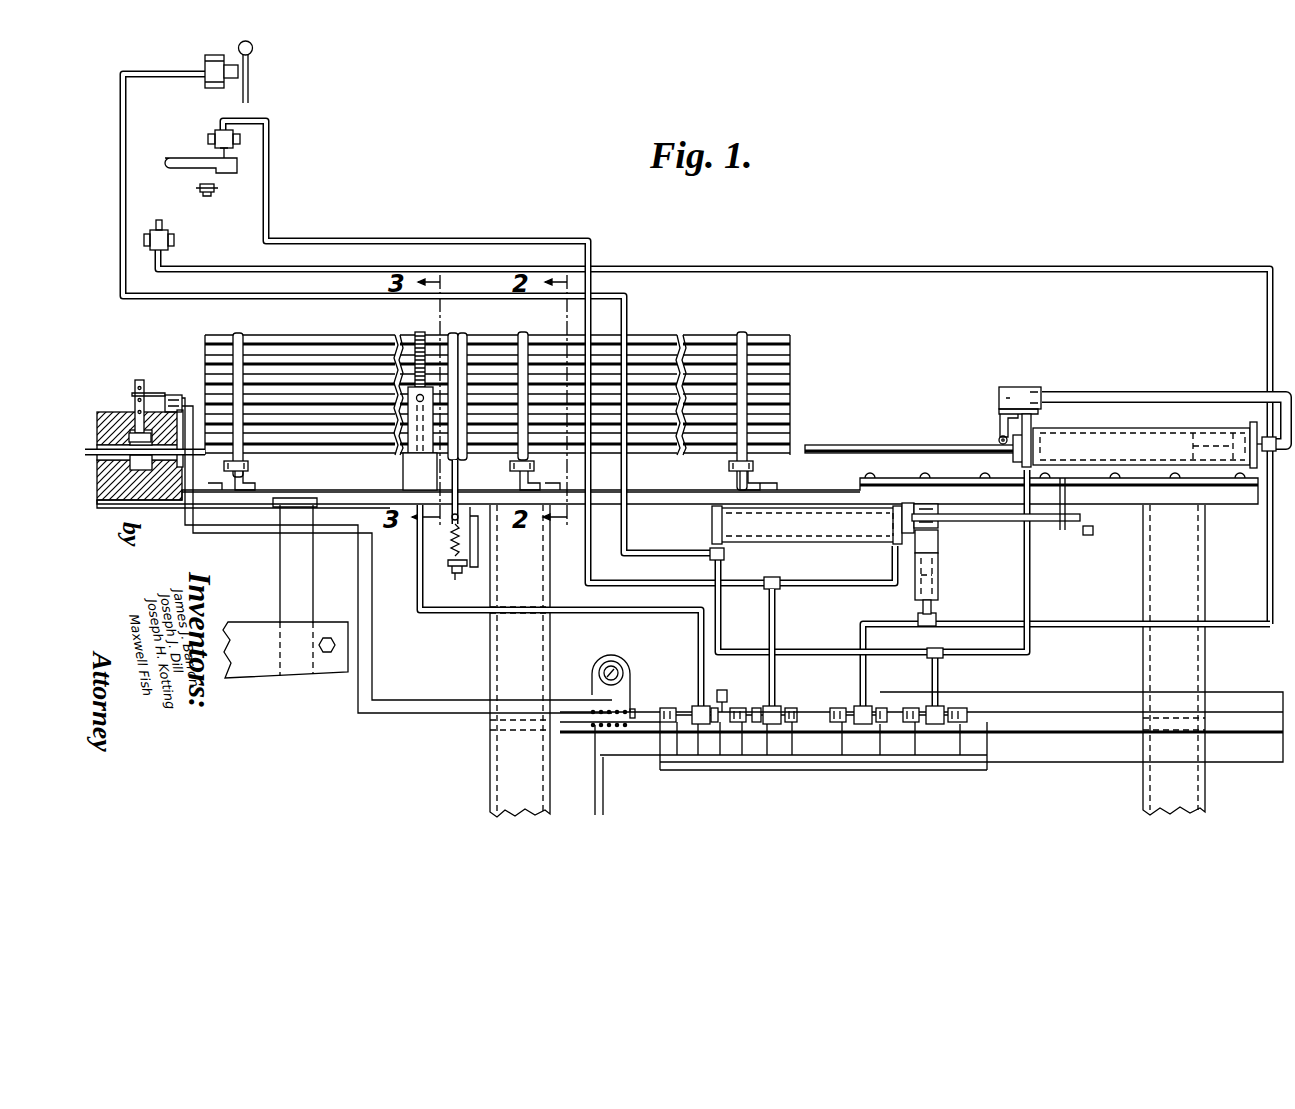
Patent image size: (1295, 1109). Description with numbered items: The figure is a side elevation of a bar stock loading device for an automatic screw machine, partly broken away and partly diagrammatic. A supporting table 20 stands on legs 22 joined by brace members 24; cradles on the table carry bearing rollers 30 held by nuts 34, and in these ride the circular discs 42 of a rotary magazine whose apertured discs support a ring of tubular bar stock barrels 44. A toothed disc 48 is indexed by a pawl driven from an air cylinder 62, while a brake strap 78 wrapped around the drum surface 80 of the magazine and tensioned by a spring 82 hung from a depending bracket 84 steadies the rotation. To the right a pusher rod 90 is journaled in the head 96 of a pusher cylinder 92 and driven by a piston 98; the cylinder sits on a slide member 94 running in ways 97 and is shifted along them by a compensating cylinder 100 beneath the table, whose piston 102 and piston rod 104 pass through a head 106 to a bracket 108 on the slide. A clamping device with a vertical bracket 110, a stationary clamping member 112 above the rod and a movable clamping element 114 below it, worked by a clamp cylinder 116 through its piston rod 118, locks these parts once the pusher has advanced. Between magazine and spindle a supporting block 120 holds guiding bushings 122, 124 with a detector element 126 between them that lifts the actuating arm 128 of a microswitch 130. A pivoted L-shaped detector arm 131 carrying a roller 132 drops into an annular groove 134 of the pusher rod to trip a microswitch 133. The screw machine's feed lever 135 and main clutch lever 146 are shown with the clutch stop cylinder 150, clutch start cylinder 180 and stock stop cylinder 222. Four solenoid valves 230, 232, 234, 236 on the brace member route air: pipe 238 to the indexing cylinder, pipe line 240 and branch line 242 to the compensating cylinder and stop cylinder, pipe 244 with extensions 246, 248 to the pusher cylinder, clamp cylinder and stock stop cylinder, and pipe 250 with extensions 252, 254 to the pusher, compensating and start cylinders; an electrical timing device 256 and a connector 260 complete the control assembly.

The supporting table 20 is at (808, 492).
The legs 22 is at (550, 636).
The brace members 24 is at (1098, 726).
The bearing rollers 30 is at (262, 480).
The nuts 34 is at (249, 466).
The circular discs 42 is at (238, 338).
The bar stock supporting barrels 44 is at (312, 402).
The disc 48 is at (418, 334).
The cylinder 62 is at (403, 472).
The brake strap 78 is at (454, 334).
The drum surface 80 is at (466, 338).
The tensioning spring 82 is at (451, 532).
The depending bracket 84 is at (460, 581).
The pusher rod 90 is at (876, 445).
The cylinder 92 is at (1075, 431).
The slide member 94 is at (1061, 531).
The head 96 is at (1012, 452).
The ways 97 is at (895, 466).
The piston 98 is at (1240, 425).
The compensating cylinder 100 is at (760, 522).
The piston 102 is at (887, 522).
The piston rod 104 is at (1000, 524).
The head 106 is at (907, 512).
The bracket 108 is at (1089, 536).
The bracket 110 is at (938, 574).
The stationary clamping member 112 is at (940, 515).
The movable clamping element 114 is at (938, 542).
The clamp cylinder 116 is at (921, 607).
The piston rod 118 is at (916, 578).
The supporting block 120 is at (104, 412).
The bar stock guiding bushing 122 is at (105, 500).
The bar stock guiding bushing 124 is at (173, 500).
The detector element 126 is at (138, 380).
The actuating arm 128 is at (152, 392).
The microswitch 130 is at (174, 395).
The L-shaped detector arm 131 is at (998, 420).
The roller 132 is at (998, 441).
The microswitch 133 is at (1010, 387).
The annular groove 134 is at (1198, 436).
The feed lever 135 is at (212, 194).
The main clutch lever 146 is at (250, 92).
The main clutch lever stop compressed air cylinder 150 is at (217, 133).
The main clutch lever start compressed air cylinder 180 is at (212, 59).
The compressed air cylinder 222 is at (176, 241).
The three-way valve 230 is at (692, 707).
The three-way valve 232 is at (776, 700).
The three-way valve 234 is at (858, 707).
The three-way valve 236 is at (968, 713).
The pipe 238 is at (668, 617).
The pipe line 240 is at (812, 589).
The branch line 242 is at (612, 585).
The pipe 244 is at (1095, 628).
The extension 246 is at (937, 613).
The extension 248 is at (1190, 259).
The pipe 250 is at (958, 668).
The extension 252 is at (815, 641).
The extension 254 is at (126, 213).
The electrical timing device 256 is at (595, 692).
The connector 260 is at (723, 690).